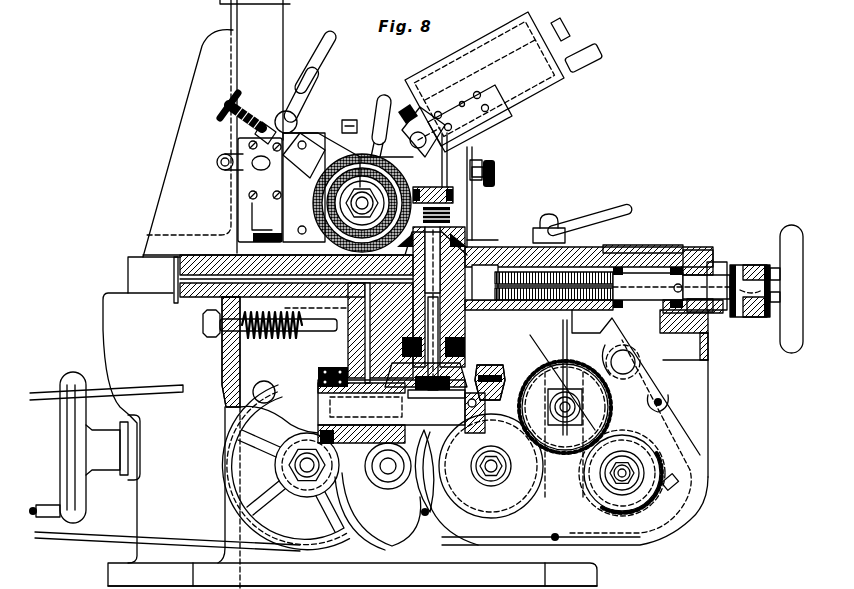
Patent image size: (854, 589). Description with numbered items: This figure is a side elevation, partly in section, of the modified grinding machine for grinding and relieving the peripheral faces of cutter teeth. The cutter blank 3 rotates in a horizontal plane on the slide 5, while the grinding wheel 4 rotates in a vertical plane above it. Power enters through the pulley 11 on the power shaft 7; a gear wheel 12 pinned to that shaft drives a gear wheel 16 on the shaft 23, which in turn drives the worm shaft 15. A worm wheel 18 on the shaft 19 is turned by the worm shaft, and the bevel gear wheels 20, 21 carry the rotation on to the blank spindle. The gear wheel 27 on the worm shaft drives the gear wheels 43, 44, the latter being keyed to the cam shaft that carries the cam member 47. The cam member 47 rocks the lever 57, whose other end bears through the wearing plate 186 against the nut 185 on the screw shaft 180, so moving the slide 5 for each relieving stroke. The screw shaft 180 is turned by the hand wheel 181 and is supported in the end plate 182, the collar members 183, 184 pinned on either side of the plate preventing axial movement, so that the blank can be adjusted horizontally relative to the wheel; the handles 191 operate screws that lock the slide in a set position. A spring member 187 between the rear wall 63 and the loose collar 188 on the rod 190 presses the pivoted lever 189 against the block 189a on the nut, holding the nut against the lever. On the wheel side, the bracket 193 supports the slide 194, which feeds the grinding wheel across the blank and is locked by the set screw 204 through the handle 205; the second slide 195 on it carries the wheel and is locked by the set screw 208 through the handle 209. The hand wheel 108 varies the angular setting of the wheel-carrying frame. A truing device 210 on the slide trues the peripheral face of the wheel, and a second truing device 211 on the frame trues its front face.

The blank milling cutter 3 is at (473, 167).
The grinding wheel 4 is at (357, 143).
The slide 5 is at (620, 272).
The power shaft 7 is at (296, 458).
The pulley 11 is at (228, 478).
The gear wheel 12 is at (292, 507).
The worm shaft 15 is at (492, 477).
The gear wheel 16 is at (382, 520).
The worm wheel 18 is at (466, 397).
The shaft 19 is at (323, 408).
The bevel gear wheel 20 is at (412, 396).
The bevel gear wheel 21 is at (474, 420).
The shaft 23 is at (398, 490).
The gear wheel 27 is at (520, 520).
The gear wheel 43 is at (608, 426).
The gear wheel 44 is at (612, 508).
The cam member 47 is at (648, 445).
The lever 57 is at (652, 340).
The rear wall 63 is at (240, 362).
The hand wheel 108 is at (72, 373).
The screw shaft 180 is at (648, 277).
The hand wheel 181 is at (783, 227).
The end plate 182 is at (690, 250).
The collar member 183 is at (682, 247).
The collar member 184 is at (755, 265).
The nut 185 is at (608, 260).
The wearing plate 186 is at (622, 243).
The spring member 187 is at (302, 331).
The loose collar 188 is at (466, 368).
The lever 189 is at (566, 336).
The block 189a is at (516, 243).
The rod 190 is at (333, 320).
The handle 191 is at (568, 222).
The bracket 193 is at (156, 182).
The slide 194 is at (283, 14).
The slide 195 is at (322, 100).
The set screw 204 is at (318, 66).
The handle 205 is at (305, 44).
The set screw 208 is at (600, 573).
The handle 209 is at (603, 588).
The truing device 210 is at (240, 143).
The truing device 211 is at (500, 33).